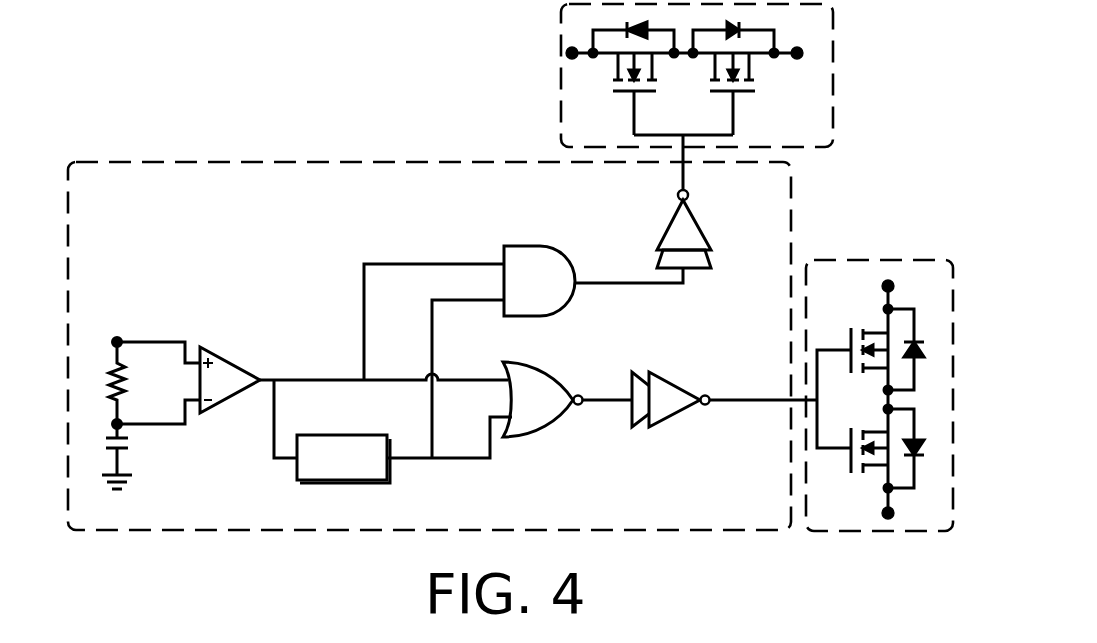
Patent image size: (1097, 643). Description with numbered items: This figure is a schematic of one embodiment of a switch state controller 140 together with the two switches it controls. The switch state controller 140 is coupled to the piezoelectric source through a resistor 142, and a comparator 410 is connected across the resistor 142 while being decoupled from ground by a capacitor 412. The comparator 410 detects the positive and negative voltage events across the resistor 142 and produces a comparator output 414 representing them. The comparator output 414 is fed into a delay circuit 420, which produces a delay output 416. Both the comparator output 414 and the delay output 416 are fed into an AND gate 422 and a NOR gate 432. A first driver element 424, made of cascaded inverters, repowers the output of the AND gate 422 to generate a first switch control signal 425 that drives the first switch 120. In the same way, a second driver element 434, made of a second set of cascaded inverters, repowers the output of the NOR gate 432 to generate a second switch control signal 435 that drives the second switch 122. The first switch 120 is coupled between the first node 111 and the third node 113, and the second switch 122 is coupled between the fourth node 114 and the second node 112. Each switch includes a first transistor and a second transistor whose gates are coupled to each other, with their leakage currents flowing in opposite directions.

The switch state controller 140 is at (373, 158).
The first switch 120 is at (556, 100).
The second switch 122 is at (874, 255).
The first node 111 is at (573, 59).
The third node 113 is at (801, 42).
The second node 112 is at (882, 517).
The fourth node 114 is at (891, 282).
The first switch control signal 425 is at (683, 172).
The first driver element 424 is at (700, 229).
The AND gate 422 is at (528, 246).
The resistor 142 is at (110, 369).
The capacitor 412 is at (122, 437).
The comparator 410 is at (223, 362).
The comparator output 414 is at (270, 379).
The delay circuit 420 is at (321, 434).
The delay output 416 is at (411, 459).
The NOR gate 432 is at (522, 362).
The second driver element 434 is at (658, 373).
The second switch control signal 435 is at (731, 398).